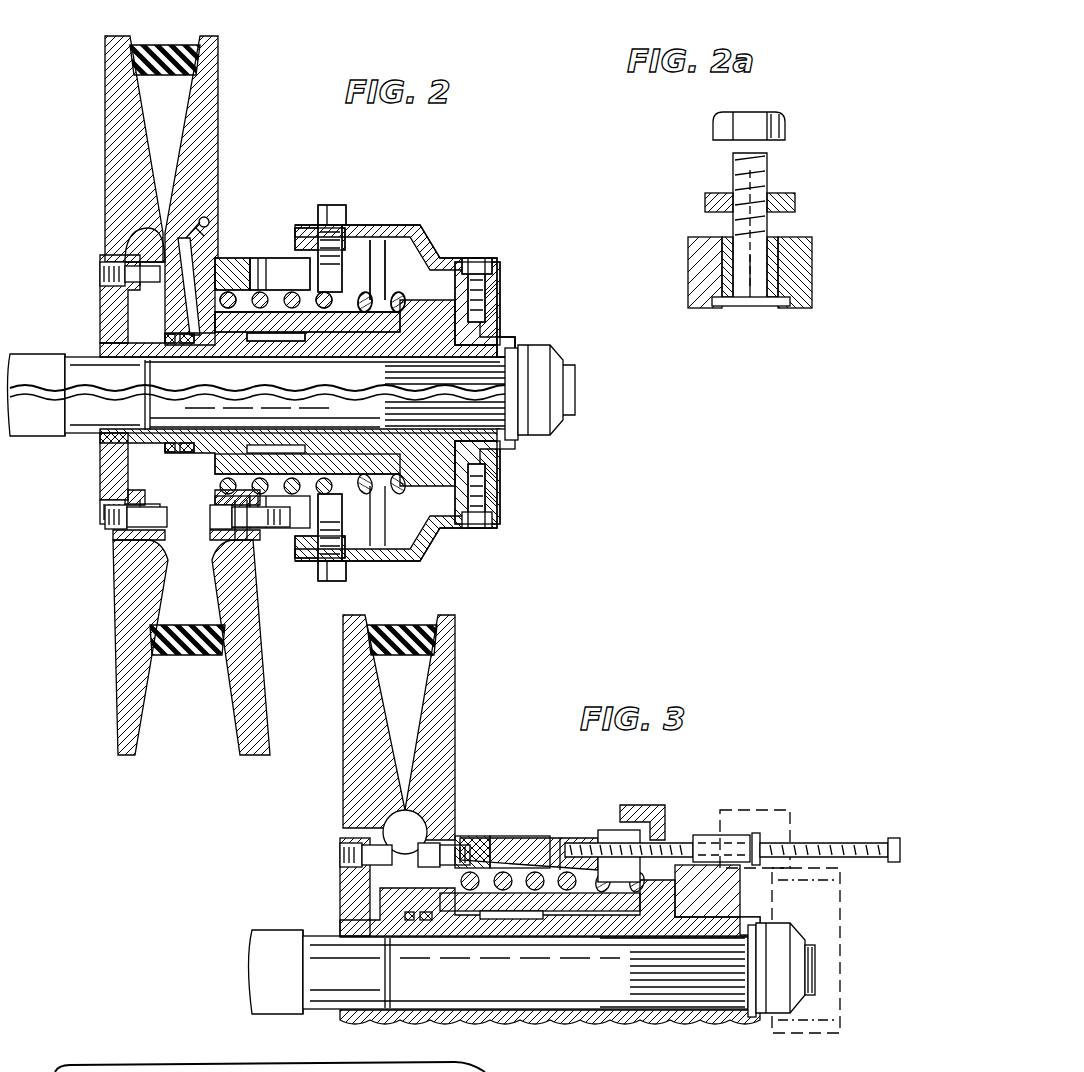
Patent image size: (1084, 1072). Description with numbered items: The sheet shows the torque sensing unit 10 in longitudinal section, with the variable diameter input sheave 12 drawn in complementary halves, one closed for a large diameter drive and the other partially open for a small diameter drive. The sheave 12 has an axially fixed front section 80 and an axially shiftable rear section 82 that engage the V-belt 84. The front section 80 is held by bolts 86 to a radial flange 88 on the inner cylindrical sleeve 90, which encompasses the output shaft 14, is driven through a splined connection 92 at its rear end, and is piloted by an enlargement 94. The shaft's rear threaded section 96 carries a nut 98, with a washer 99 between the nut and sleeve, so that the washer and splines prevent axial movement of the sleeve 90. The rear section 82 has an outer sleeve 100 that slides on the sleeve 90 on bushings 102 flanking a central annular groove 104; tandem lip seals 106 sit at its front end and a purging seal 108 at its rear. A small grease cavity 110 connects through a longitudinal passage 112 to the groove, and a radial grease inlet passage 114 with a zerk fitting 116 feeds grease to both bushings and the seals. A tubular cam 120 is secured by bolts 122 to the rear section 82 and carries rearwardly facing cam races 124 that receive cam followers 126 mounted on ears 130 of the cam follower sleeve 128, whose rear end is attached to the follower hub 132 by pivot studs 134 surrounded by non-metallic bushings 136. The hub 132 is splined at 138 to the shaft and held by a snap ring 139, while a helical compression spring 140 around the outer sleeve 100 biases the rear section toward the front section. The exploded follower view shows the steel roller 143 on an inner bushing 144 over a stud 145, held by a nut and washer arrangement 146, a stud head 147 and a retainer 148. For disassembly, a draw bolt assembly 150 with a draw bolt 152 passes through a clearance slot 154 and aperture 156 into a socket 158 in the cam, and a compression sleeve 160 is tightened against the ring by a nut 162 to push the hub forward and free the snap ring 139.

In FIG. 2, the torque sensing unit 10 is at (305, 188).
In FIG. 3, the torque sensing unit 10 is at (540, 785).
In FIG. 2, the variable diameter input sheave 12 is at (220, 40).
In FIG. 3, the variable diameter input sheave 12 is at (460, 616).
In FIG. 2, the output shaft 14 is at (279, 380).
In FIG. 3, the output shaft 14 is at (499, 971).
In FIG. 2, the front section 80 is at (118, 130).
In FIG. 3, the front section 80 is at (356, 735).
In FIG. 2, the rear section 82 is at (203, 132).
In FIG. 3, the rear section 82 is at (447, 742).
In FIG. 2, the V-belt 84 is at (175, 80).
In FIG. 3, the V-belt 84 is at (392, 655).
In FIG. 2, the bolts 86 is at (100, 264).
In FIG. 3, the bolts 86 is at (340, 850).
In FIG. 2, the radial flange 88 is at (100, 305).
In FIG. 3, the radial flange 88 is at (340, 880).
In FIG. 2, the inner cylindrical sleeve 90 is at (268, 333).
In FIG. 3, the inner cylindrical sleeve 90 is at (470, 925).
In FIG. 2, the splined connection 92 is at (405, 368).
In FIG. 3, the splined connection 92 is at (695, 990).
In FIG. 2, the enlargement 94 is at (95, 360).
In FIG. 3, the enlargement 94 is at (330, 938).
In FIG. 2, the reduced diameter threaded section 96 is at (565, 375).
In FIG. 3, the reduced diameter threaded section 96 is at (812, 972).
In FIG. 3, the nut 98 is at (815, 1000).
In FIG. 2, the washer 99 is at (512, 440).
In FIG. 3, the washer 99 is at (752, 1018).
In FIG. 2, the outer sleeve 100 is at (334, 296).
In FIG. 3, the outer sleeve 100 is at (530, 870).
In FIG. 2, the bushings 102 is at (290, 341).
In FIG. 3, the bushings 102 is at (510, 920).
In FIG. 2, the central annular groove 104 is at (282, 258).
In FIG. 3, the central annular groove 104 is at (540, 925).
In FIG. 2, the lubricant retaining lip seals 106 is at (205, 460).
In FIG. 2, the lubricant purging seal 108 is at (372, 296).
In FIG. 3, the lubricant purging seal 108 is at (618, 915).
In FIG. 2, the small grease cavity 110 is at (190, 343).
In FIG. 3, the small grease cavity 110 is at (415, 925).
In FIG. 2, the longitudinally extending passage 112 is at (228, 258).
In FIG. 3, the longitudinally extending passage 112 is at (530, 835).
In FIG. 2, the radial grease inlet passage 114 is at (130, 240).
In FIG. 2, the zerk fitting 116 is at (208, 217).
In FIG. 2, the torque sensing cam member 120 is at (210, 540).
In FIG. 3, the torque sensing cam member 120 is at (490, 840).
In FIG. 2, the bolts 122 is at (215, 542).
In FIG. 3, the bolts 122 is at (440, 840).
In FIG. 2, the cam races 124 is at (290, 240).
In FIG. 2, the cam followers 126 is at (336, 250).
In FIG. 2a, the cam followers 126 is at (672, 310).
In FIG. 2, the cam follower sleeve 128 is at (420, 270).
In FIG. 3, the cam follower sleeve 128 is at (665, 805).
In FIG. 2, the ears 130 is at (328, 210).
In FIG. 2, the follower sleeve-supporting hub 132 is at (500, 300).
In FIG. 3, the follower sleeve-supporting hub 132 is at (745, 885).
In FIG. 2, the pivot studs 134 is at (492, 268).
In FIG. 2, the non-metallic bushings 136 is at (478, 258).
In FIG. 2, the splines 138 is at (514, 340).
In FIG. 3, the splines 138 is at (630, 968).
In FIG. 2, the snap ring 139 is at (516, 350).
In FIG. 3, the snap ring 139 is at (762, 925).
In FIG. 2, the helical compression spring 140 is at (388, 260).
In FIG. 3, the helical compression spring 140 is at (560, 840).
In FIG. 2a, the steel roller 143 is at (800, 260).
In FIG. 2a, the inner bushing 144 is at (790, 270).
In FIG. 2a, the stud 145 is at (755, 306).
In FIG. 2a, the nut and washer arrangement 146 is at (785, 130).
In FIG. 2a, the stud head 147 is at (735, 306).
In FIG. 2a, the retainer 148 is at (775, 212).
In FIG. 3, the draw bolt assembly 150 is at (898, 838).
In FIG. 3, the draw bolt 152 is at (825, 843).
In FIG. 3, the clearance slot 154 is at (720, 838).
In FIG. 3, the aperture 156 is at (718, 826).
In FIG. 3, the socket 158 is at (600, 840).
In FIG. 3, the compression sleeve 160 is at (762, 820).
In FIG. 3, the nut 162 is at (760, 838).